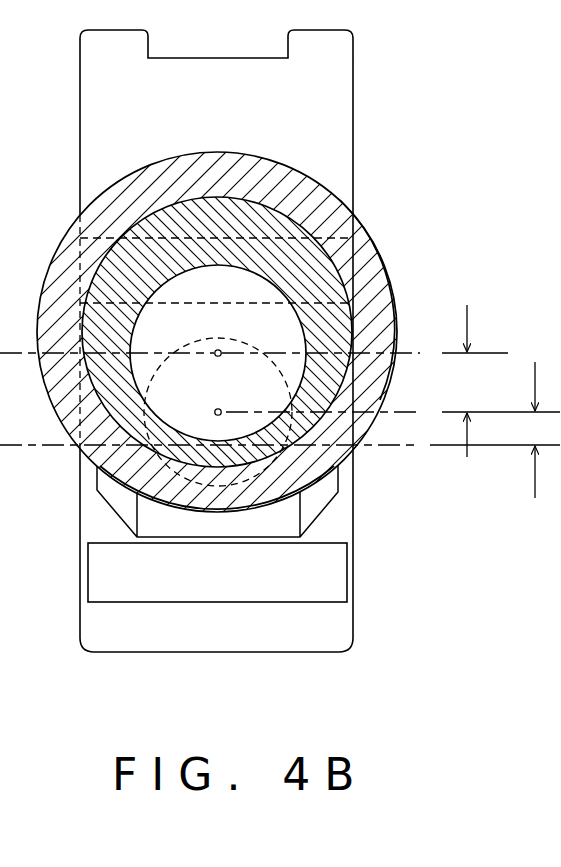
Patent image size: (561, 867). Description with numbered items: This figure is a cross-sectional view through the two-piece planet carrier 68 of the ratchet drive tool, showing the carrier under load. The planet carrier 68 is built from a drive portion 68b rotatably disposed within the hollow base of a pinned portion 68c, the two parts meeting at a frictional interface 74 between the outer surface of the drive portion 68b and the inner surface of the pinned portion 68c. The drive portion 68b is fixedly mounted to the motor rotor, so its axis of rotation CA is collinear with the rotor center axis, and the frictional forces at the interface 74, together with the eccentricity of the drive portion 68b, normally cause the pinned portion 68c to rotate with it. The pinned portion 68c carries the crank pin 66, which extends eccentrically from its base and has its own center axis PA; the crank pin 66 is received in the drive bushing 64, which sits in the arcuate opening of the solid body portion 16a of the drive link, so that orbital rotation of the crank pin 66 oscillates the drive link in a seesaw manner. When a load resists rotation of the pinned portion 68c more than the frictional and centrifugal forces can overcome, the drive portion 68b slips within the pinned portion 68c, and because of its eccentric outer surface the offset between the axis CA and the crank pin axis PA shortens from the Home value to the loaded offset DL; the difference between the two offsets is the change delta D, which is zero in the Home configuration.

The solid body portion 16a is at (335, 235).
The drive bushing 64 is at (283, 530).
The crank pin 66 is at (177, 473).
The planet carrier 68 is at (72, 216).
The drive portion 68b is at (212, 452).
The pinned portion 68c is at (247, 505).
The frictional interface 74 is at (371, 257).
The axis of rotation of the drive portion CA is at (222, 346).
The center axis of the crank pin PA is at (221, 417).
The D load DL is at (501, 381).